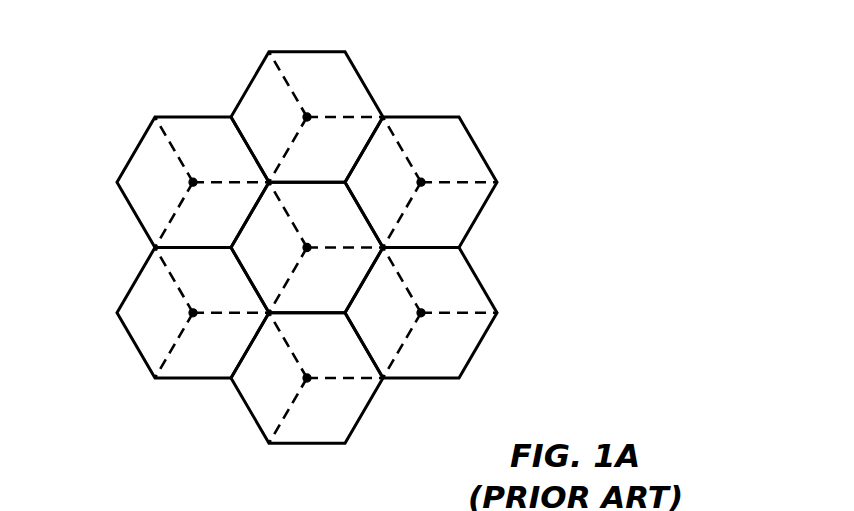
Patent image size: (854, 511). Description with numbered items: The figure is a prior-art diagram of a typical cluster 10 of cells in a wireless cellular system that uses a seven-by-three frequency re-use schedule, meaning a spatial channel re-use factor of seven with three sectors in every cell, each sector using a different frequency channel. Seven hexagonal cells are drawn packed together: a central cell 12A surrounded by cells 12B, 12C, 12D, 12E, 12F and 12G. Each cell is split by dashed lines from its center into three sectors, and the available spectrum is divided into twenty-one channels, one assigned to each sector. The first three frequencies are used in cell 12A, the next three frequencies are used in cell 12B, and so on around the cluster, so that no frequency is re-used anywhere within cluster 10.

The cluster 10 is at (543, 134).
The cell 12A is at (247, 263).
The cell 12B is at (476, 277).
The cell 12C is at (366, 407).
The cell 12D is at (131, 338).
The cell 12E is at (127, 164).
The cell 12F is at (254, 78).
The cell 12G is at (412, 117).